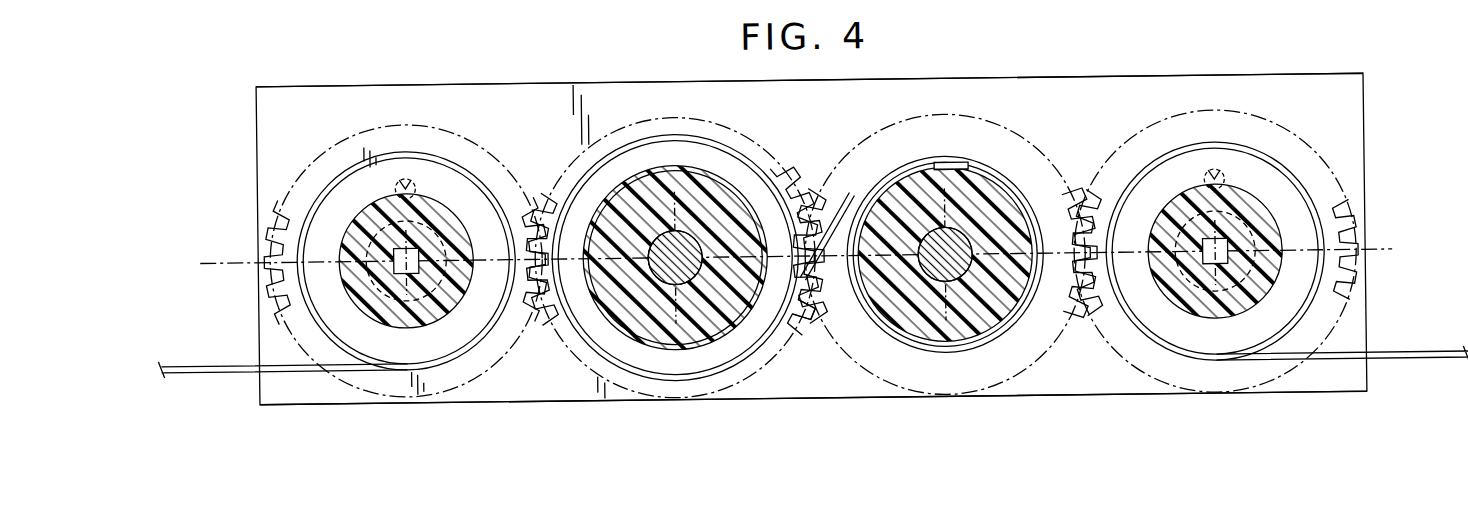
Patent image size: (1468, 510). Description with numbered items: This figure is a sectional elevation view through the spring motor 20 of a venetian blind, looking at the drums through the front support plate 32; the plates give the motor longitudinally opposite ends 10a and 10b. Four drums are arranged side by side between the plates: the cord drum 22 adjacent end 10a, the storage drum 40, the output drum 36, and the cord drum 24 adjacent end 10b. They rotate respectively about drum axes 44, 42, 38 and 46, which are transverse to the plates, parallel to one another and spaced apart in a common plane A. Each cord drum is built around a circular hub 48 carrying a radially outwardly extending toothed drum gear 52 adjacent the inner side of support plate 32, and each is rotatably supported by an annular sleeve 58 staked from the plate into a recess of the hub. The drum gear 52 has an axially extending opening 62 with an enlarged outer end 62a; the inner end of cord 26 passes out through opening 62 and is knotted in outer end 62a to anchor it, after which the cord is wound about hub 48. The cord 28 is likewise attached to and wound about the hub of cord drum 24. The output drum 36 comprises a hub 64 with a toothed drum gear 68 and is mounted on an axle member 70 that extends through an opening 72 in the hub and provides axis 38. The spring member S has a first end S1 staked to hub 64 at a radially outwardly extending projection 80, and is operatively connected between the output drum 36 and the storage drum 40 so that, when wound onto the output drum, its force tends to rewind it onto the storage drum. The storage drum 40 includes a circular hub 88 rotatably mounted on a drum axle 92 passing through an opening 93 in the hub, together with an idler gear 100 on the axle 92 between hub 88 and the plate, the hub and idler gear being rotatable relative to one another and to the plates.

The end of motor 10a is at (258, 128).
The end of motor 10b is at (1366, 132).
The spring motor 20 is at (778, 375).
The cord drum 22 is at (378, 133).
The cord drum 24 is at (1279, 156).
The cord 26 is at (200, 369).
The cord 28 is at (1402, 367).
The front support plate 32 is at (1047, 90).
The output drum 36 is at (974, 352).
The drum axis 38 is at (940, 277).
The storage drum 40 is at (641, 168).
The drum axis 42 is at (672, 273).
The drum axis 44 is at (418, 250).
The drum axis 46 is at (1240, 245).
The circular hub 48 is at (397, 313).
The toothed drum gear 52 is at (268, 243).
The annular sleeve 58 is at (365, 210).
The axially extending opening 62 is at (413, 175).
The enlarged outer end of opening 62a is at (401, 173).
The hub of output drum 64 is at (997, 204).
The toothed drum gear 68 is at (826, 182).
The axle member 70 is at (965, 267).
The opening in hub 72 is at (940, 272).
The radially outwardly extending projection 80 is at (943, 167).
The circular hub 88 is at (696, 327).
The drum axle 92 is at (685, 243).
The opening in hub 93 is at (616, 193).
The idler gear 100 is at (794, 328).
The spring member S is at (845, 202).
The first end of spring S1 is at (964, 169).
The common plane A is at (1385, 254).